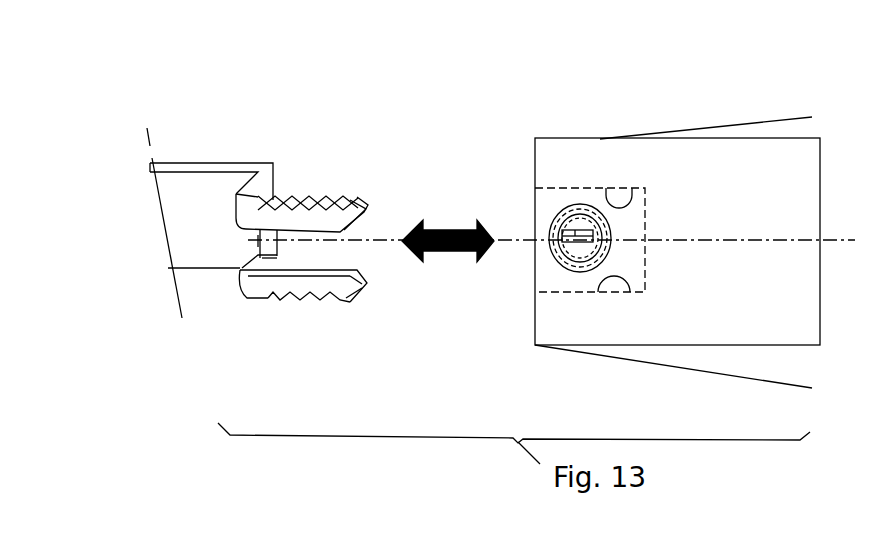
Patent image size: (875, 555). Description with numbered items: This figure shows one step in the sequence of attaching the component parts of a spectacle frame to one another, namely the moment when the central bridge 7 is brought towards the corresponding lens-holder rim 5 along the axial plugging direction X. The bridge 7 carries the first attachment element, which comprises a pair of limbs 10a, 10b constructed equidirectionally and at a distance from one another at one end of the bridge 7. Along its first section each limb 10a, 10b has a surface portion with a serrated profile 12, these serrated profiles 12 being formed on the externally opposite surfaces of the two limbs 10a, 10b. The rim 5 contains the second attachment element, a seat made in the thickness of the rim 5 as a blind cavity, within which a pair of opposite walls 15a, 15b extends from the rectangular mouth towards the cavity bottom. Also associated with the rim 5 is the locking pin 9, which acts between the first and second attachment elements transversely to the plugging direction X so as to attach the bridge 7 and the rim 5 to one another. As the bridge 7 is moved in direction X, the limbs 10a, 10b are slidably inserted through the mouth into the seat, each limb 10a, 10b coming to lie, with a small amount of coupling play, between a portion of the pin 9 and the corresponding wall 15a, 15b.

The lens-holder rim 5 is at (772, 362).
The central bridge 7 is at (208, 162).
The locking pin 9 is at (548, 266).
The limb 10a is at (372, 228).
The limb 10b is at (365, 278).
The serrated profile 12 is at (308, 184).
The wall 15a is at (627, 207).
The wall 15b is at (633, 297).
The axial plugging direction X is at (380, 237).